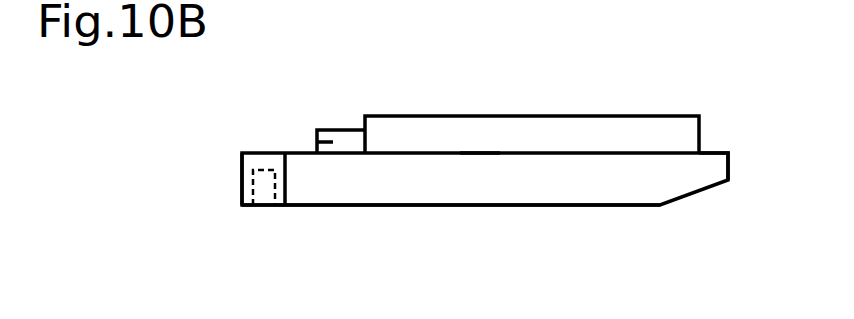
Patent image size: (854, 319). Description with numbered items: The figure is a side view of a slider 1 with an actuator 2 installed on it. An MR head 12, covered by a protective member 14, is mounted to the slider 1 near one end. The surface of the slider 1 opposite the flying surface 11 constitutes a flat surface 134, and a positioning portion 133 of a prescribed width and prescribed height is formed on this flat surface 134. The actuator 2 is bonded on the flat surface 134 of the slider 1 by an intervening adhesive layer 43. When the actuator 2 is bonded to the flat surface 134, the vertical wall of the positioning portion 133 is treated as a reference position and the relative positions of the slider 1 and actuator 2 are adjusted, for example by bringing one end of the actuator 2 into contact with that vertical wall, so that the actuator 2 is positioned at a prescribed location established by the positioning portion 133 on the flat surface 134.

The slider 1 is at (597, 174).
The flying surface 11 is at (408, 206).
The protective member 14 is at (250, 159).
The MR head 12 is at (258, 188).
The positioning portion 133 is at (315, 142).
The actuator 2 is at (607, 132).
The flat surface 134 is at (710, 149).
The adhesive layer 43 is at (480, 153).